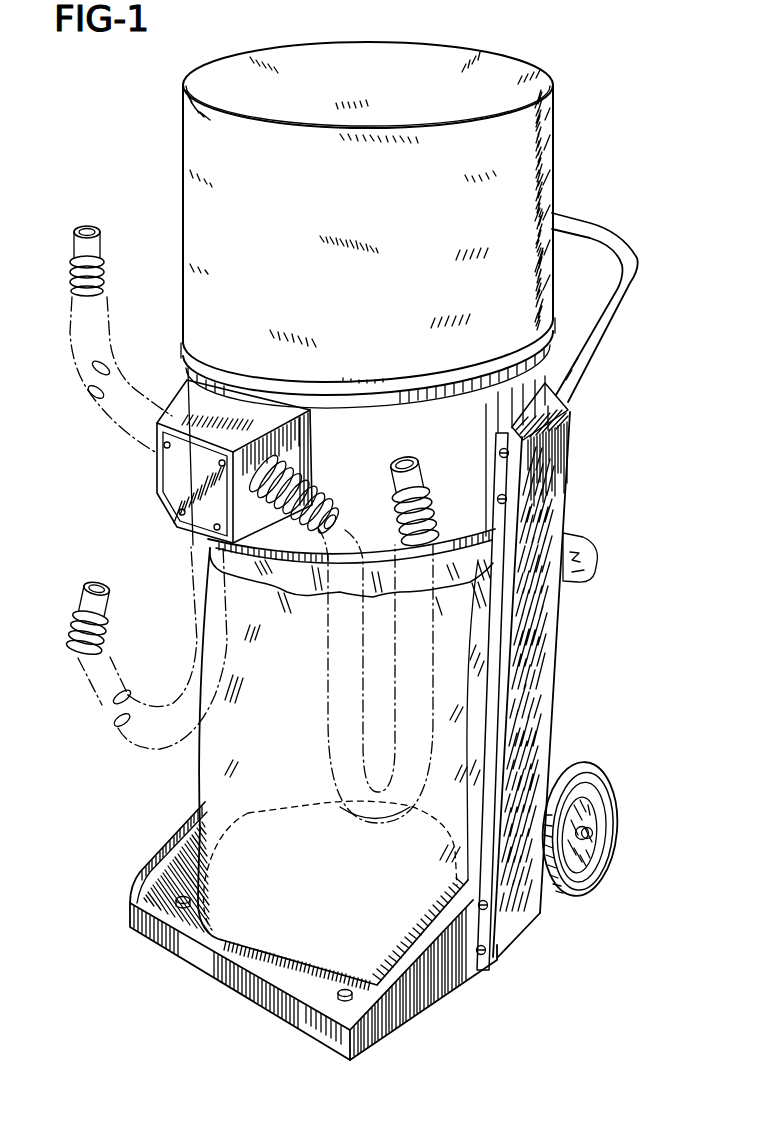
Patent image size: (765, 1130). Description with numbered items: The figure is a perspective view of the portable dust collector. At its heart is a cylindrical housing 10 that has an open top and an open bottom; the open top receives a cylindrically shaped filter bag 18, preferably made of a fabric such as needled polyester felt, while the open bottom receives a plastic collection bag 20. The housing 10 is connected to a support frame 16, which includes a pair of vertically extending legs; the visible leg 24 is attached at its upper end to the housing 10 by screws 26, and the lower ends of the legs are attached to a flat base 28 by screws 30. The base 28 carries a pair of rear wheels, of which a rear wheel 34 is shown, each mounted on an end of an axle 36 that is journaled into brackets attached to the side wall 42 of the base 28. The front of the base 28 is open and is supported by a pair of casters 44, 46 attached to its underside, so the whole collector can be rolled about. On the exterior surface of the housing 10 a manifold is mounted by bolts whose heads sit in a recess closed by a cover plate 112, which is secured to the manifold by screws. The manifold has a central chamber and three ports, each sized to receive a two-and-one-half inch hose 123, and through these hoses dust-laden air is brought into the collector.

The cylindrical housing 10 is at (553, 363).
The support frame 16 is at (562, 640).
The filter bag 18 is at (553, 177).
The collection bag 20 is at (203, 770).
The leg 24 is at (538, 735).
The screws 26 is at (497, 500).
The base 28 is at (305, 980).
The screws 30 is at (488, 906).
The rear wheel 34 is at (592, 774).
The axle 36 is at (590, 833).
The side wall 42 is at (450, 976).
The caster 44 is at (182, 910).
The caster 46 is at (340, 1002).
The cover plate 112 is at (162, 471).
The hose 123 is at (178, 559).